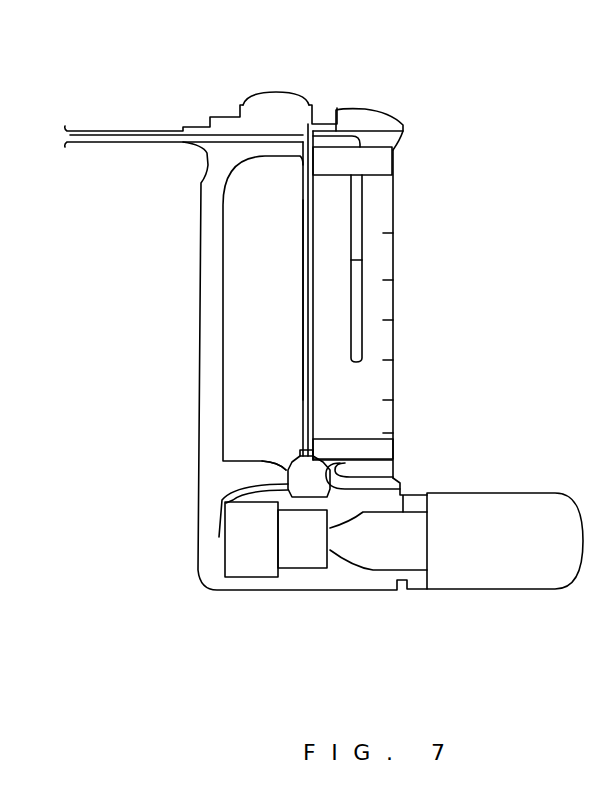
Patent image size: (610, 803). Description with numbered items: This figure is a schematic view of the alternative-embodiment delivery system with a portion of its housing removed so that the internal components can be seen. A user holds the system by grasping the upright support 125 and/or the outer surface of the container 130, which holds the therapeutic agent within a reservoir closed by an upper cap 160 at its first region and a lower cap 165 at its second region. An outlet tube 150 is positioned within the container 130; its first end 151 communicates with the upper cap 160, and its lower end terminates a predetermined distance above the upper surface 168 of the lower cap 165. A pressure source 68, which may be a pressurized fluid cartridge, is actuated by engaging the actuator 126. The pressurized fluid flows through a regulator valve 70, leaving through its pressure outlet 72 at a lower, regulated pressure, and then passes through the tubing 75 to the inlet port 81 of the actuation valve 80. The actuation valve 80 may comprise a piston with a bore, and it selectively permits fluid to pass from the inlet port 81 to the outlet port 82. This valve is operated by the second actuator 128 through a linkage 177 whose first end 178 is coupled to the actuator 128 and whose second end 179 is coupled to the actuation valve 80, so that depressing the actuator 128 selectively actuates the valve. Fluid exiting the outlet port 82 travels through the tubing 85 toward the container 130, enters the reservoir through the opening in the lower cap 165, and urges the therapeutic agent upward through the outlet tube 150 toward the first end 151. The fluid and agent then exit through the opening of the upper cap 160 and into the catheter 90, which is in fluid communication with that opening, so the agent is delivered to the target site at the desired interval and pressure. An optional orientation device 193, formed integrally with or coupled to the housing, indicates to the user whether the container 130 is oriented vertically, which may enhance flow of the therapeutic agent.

The pressure source 68 is at (387, 560).
The regulator valve 70 is at (262, 569).
The pressure outlet 72 is at (219, 537).
The tubing 75 is at (226, 485).
The actuation valve 80 is at (287, 457).
The inlet port 81 is at (283, 470).
The outlet port 82 is at (395, 488).
The tubing 85 is at (393, 470).
The catheter 90 is at (114, 131).
The upright support 125 is at (207, 310).
The actuator 126 is at (543, 577).
The actuator 128 is at (372, 115).
The container 130 is at (398, 287).
The outlet tube 150 is at (365, 262).
The first end 151 is at (362, 187).
The upper cap 160 is at (385, 161).
The lower cap 165 is at (383, 450).
The upper surface 168 is at (377, 436).
The linkage 177 is at (302, 278).
The first end 178 is at (315, 112).
The second end 179 is at (292, 453).
The orientation device 193 is at (268, 90).